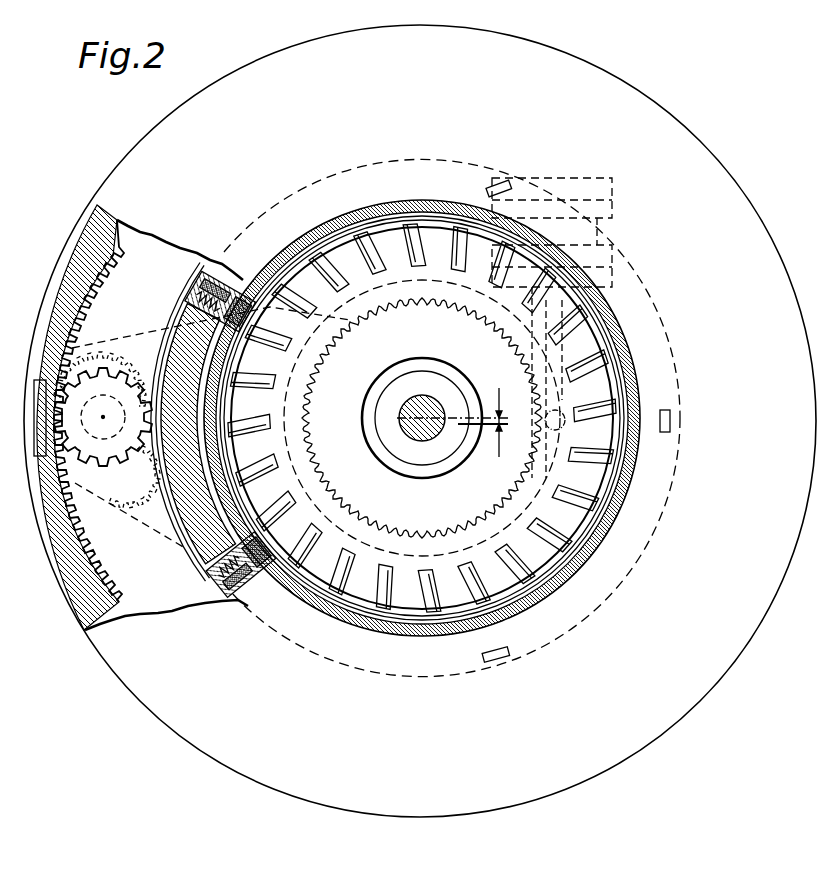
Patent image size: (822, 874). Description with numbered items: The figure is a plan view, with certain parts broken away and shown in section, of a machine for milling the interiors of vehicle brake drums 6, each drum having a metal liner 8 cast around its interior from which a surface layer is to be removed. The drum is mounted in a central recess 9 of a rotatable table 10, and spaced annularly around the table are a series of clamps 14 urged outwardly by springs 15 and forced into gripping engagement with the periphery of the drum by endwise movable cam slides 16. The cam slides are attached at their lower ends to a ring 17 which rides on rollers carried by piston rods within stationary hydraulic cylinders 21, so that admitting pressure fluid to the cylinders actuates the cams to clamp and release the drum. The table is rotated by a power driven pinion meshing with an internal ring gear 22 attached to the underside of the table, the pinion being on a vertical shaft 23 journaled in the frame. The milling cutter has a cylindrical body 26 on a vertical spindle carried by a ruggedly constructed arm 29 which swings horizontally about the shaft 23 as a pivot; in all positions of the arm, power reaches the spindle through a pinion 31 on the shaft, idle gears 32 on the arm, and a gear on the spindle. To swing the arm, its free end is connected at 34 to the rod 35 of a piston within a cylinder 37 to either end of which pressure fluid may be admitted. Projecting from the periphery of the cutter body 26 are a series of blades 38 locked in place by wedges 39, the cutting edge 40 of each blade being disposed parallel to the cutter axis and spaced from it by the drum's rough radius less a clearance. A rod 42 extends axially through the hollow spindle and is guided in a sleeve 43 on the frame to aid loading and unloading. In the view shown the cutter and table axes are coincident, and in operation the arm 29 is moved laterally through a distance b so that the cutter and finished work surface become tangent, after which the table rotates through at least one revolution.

The vehicle brake drum 6 is at (347, 625).
The liner 8 is at (370, 620).
The central recess 9 is at (404, 636).
The table 10 is at (346, 796).
The clamps 14 is at (242, 272).
The springs 15 is at (228, 267).
The cam slides 16 is at (203, 293).
The ring 17 is at (668, 512).
The hydraulic cylinders 21 is at (125, 380).
The internal ring gear 22 is at (95, 563).
The vertical shaft 23 is at (108, 478).
The cylindrical body 26 is at (338, 217).
The arm 29 is at (150, 340).
The pinion 31 is at (211, 327).
The idle gears 32 is at (332, 357).
The connection 34 is at (462, 422).
The rod 35 is at (628, 337).
The cylinder 37 is at (612, 195).
The blades 38 is at (456, 212).
The wedges 39 is at (390, 218).
The cutting edge 40 is at (521, 603).
The rod 42 is at (437, 405).
The sleeve 43 is at (405, 383).